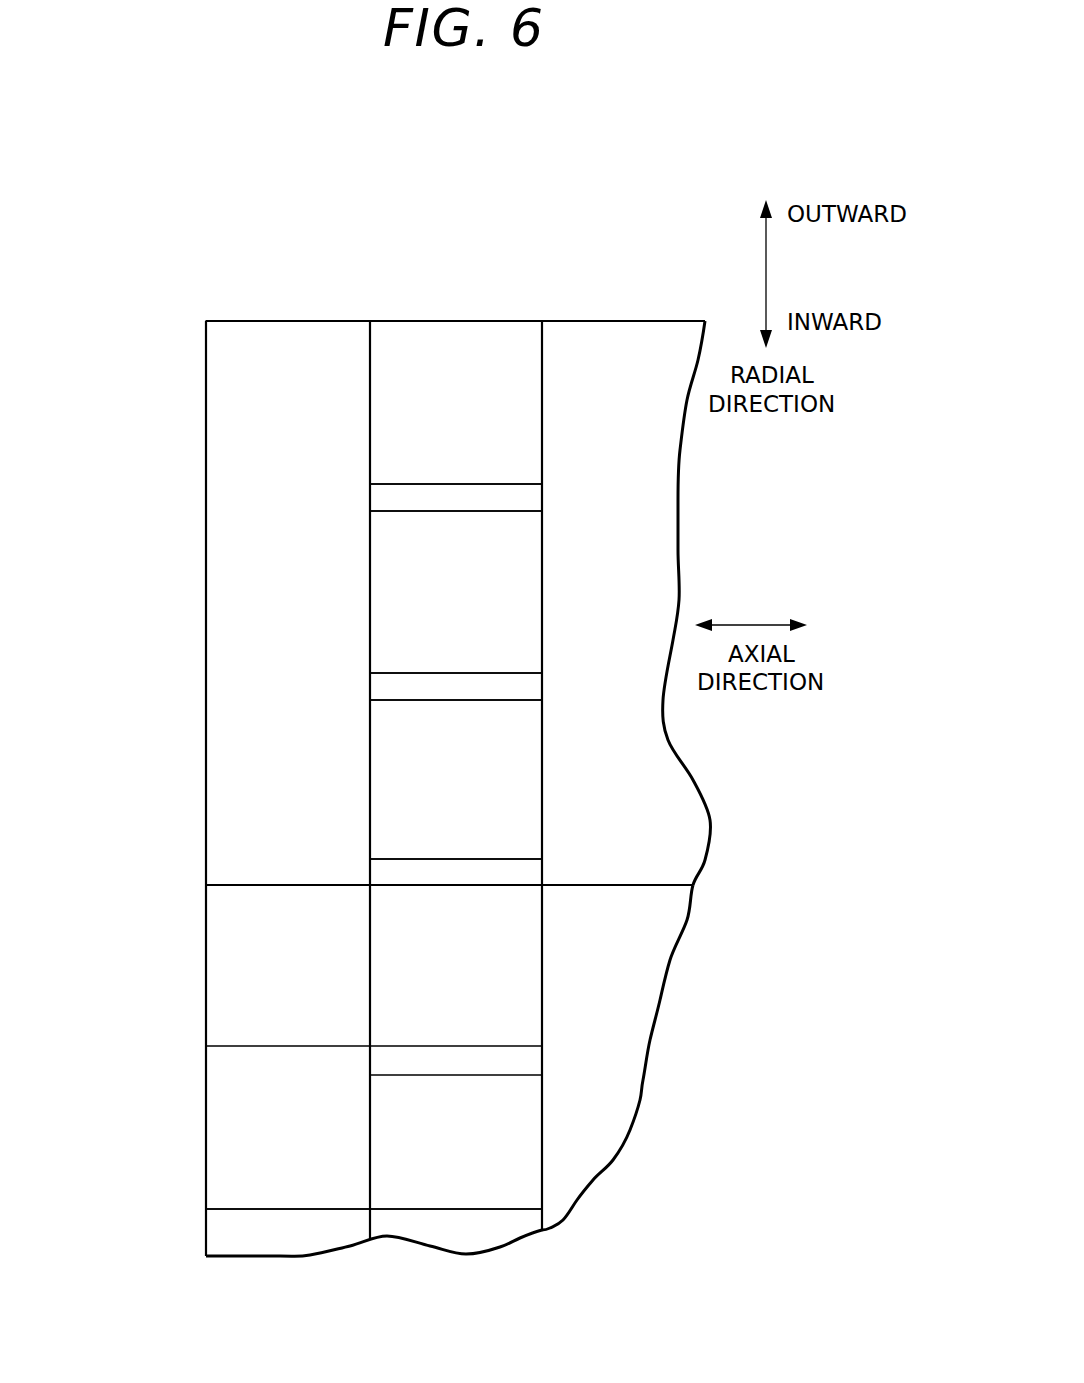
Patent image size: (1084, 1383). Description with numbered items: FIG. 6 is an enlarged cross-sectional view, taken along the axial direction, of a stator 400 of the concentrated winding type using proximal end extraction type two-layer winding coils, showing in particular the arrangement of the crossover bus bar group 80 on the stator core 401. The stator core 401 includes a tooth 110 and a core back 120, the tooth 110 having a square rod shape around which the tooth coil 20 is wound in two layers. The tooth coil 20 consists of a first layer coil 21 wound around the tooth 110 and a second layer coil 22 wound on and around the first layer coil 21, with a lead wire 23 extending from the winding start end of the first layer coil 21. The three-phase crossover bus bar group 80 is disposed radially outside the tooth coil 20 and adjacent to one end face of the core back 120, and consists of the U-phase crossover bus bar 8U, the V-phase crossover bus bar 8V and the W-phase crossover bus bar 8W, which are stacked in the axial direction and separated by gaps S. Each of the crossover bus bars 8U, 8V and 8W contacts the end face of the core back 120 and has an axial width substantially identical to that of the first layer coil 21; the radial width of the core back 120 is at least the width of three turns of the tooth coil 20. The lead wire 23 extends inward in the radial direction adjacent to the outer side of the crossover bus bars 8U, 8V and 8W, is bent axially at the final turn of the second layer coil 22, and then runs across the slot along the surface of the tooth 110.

The stator 400 is at (457, 214).
The stator core 401 is at (322, 271).
The three-phase crossover bus bar group 80 is at (480, 310).
The W-phase crossover bus bar 8W is at (400, 422).
The V-phase crossover bus bar 8V is at (400, 603).
The U-phase crossover bus bar 8U is at (400, 793).
The gap between coils S is at (537, 495).
The lead wire 23 is at (278, 625).
The core back 120 is at (653, 507).
The tooth 110 is at (633, 1010).
The tooth coil 20 is at (192, 1112).
The second layer coil 22 is at (253, 977).
The first layer coil 21 is at (400, 977).